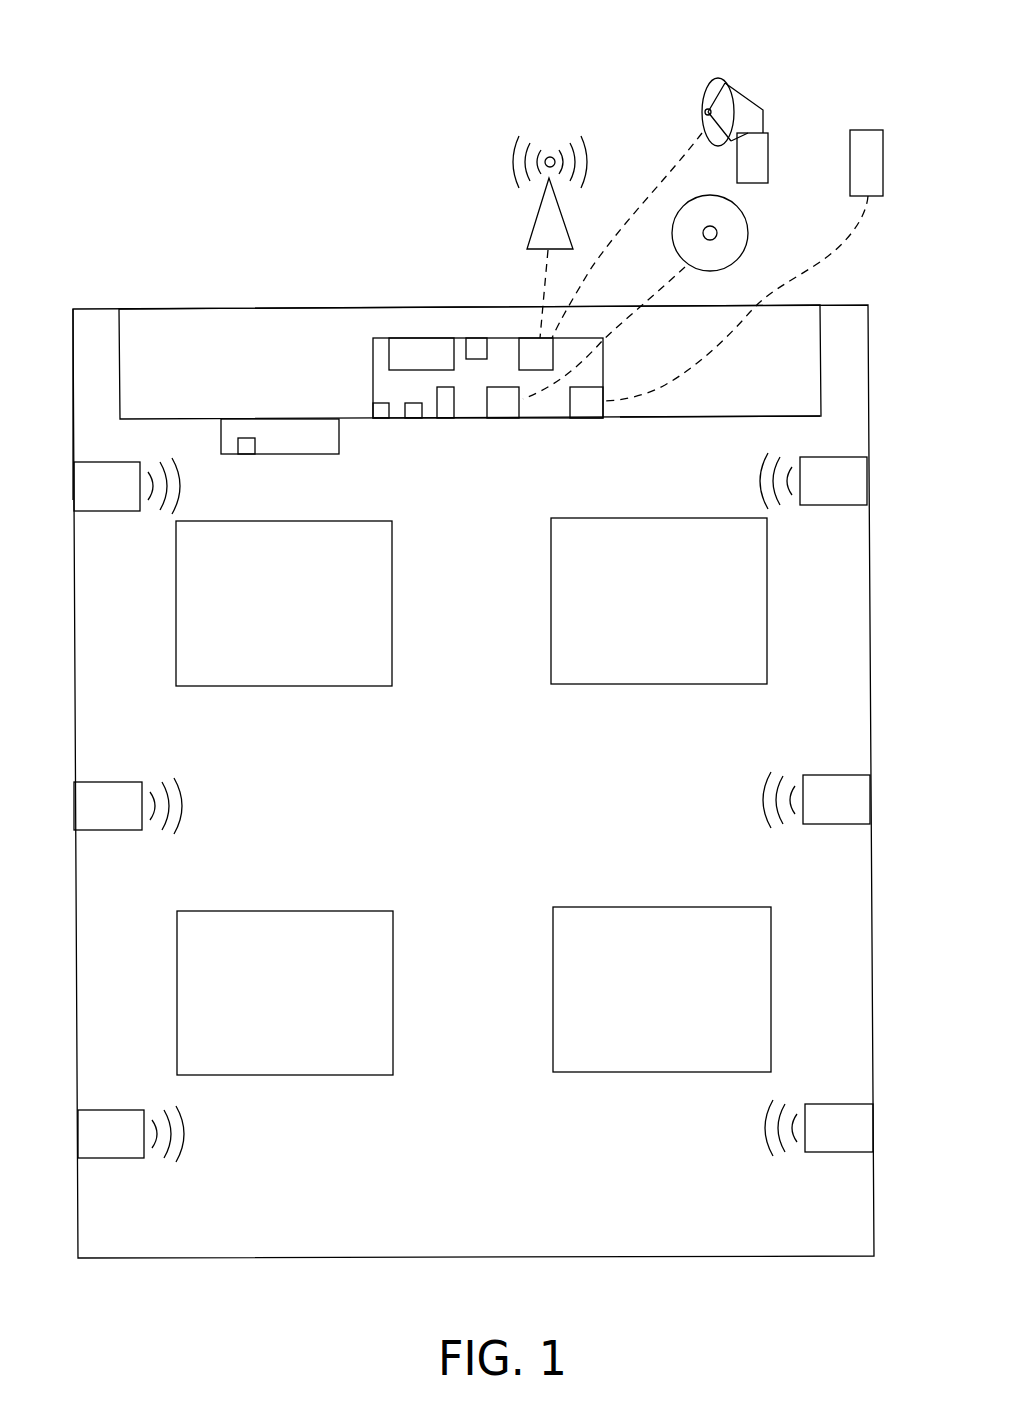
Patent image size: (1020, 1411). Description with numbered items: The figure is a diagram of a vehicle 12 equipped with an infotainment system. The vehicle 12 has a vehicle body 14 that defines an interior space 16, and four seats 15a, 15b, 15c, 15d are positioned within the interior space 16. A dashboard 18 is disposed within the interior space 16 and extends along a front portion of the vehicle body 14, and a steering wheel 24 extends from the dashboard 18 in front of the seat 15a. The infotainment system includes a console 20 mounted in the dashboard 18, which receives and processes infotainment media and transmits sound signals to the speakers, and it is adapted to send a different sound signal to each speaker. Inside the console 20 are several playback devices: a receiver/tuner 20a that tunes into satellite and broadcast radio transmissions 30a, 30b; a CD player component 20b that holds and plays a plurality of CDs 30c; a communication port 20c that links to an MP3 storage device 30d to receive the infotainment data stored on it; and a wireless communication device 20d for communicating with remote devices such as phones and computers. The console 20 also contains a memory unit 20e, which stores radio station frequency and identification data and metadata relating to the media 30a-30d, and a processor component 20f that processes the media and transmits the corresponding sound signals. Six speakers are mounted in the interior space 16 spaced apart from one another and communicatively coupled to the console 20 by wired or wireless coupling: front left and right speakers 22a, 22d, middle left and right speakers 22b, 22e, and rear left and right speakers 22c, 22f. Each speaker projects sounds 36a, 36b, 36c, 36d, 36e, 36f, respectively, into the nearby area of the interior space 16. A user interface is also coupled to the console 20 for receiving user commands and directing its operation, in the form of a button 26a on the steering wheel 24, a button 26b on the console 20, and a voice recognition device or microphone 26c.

The vehicle 12 is at (118, 300).
The vehicle body 14 is at (847, 304).
The interior space 16 is at (88, 318).
The dashboard 18 is at (672, 418).
The console 20 is at (373, 360).
The receiver/tuner 20a is at (528, 338).
The CD player component 20b is at (500, 418).
The communication port 20c is at (585, 418).
The wireless communication device 20d is at (445, 418).
The memory unit 20e is at (407, 338).
The processor component 20f is at (473, 338).
The front left speaker 22a is at (117, 462).
The middle left speaker 22b is at (117, 782).
The rear left speaker 22c is at (118, 1110).
The front right speaker 22d is at (835, 457).
The middle right speaker 22e is at (830, 775).
The rear right speaker 22f is at (833, 1104).
The steering wheel 24 is at (309, 455).
The button 26a is at (238, 446).
The button 26b is at (373, 410).
The voice recognition device/microphone 26c is at (413, 418).
The satellite radio transmission 30a is at (717, 82).
The broadcast radio transmission 30b is at (537, 213).
The compact discs 30c is at (750, 240).
The MP3 storage device 30d is at (866, 130).
The seat 15a is at (304, 609).
The seat 15b is at (679, 608).
The seat 15c is at (304, 999).
The seat 15d is at (679, 996).
The sound 36a is at (165, 503).
The sound 36b is at (186, 806).
The sound 36c is at (187, 1135).
The sound 36d is at (772, 501).
The sound 36e is at (759, 801).
The sound 36f is at (762, 1131).